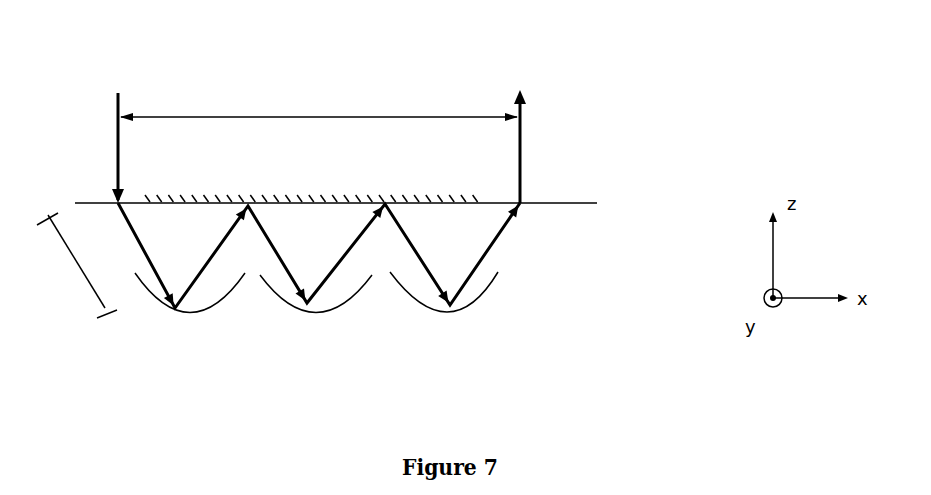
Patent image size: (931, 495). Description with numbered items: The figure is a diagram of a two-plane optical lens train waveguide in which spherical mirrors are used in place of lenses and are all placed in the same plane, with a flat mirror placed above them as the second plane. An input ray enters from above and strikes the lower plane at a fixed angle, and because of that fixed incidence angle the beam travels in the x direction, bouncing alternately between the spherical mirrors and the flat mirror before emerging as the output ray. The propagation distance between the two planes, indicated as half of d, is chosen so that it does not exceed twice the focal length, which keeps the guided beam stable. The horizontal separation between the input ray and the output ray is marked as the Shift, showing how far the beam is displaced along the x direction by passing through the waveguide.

The element input ray is at (82, 134).
The element output ray is at (480, 127).
The shift Shift is at (319, 99).
The element flat mirror is at (336, 192).